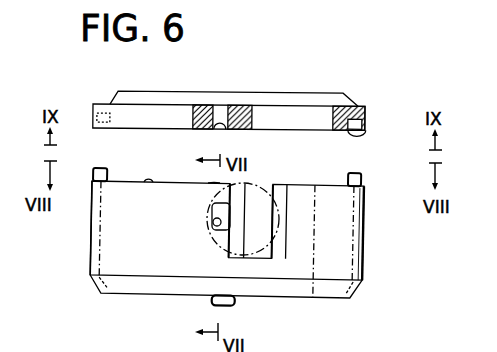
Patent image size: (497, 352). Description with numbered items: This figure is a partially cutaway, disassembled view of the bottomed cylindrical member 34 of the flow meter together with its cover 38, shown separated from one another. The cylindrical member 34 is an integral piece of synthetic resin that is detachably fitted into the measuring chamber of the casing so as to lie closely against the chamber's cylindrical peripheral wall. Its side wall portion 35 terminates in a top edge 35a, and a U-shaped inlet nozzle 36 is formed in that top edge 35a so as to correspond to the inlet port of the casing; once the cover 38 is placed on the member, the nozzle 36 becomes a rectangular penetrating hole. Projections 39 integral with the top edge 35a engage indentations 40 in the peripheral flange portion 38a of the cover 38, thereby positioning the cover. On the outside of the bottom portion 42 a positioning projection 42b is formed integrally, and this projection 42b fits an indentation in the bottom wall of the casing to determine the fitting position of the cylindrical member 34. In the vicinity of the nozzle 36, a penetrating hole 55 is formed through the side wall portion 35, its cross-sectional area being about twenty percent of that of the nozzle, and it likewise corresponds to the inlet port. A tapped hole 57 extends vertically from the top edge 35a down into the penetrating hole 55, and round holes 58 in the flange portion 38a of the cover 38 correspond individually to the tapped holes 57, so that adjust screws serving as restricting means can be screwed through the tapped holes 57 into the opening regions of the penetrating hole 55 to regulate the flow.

The bottomed cylindrical member 34 is at (370, 260).
The side wall portion 35 is at (100, 240).
The top edge 35a is at (149, 186).
The inlet nozzle 36 is at (266, 184).
The cover 38 is at (329, 90).
The peripheral flange portion 38a is at (358, 107).
The projections 39 is at (107, 176).
The indentations 40 is at (366, 133).
The bottom portion 42 is at (309, 290).
The positioning projection 42b is at (238, 306).
The penetrating hole 55 is at (216, 229).
The tapped hole 57 is at (211, 180).
The round holes 58 is at (219, 128).